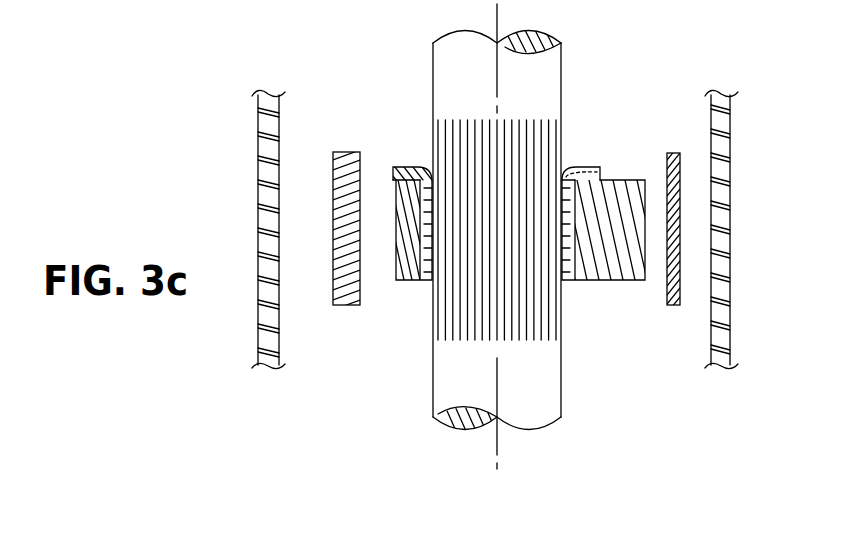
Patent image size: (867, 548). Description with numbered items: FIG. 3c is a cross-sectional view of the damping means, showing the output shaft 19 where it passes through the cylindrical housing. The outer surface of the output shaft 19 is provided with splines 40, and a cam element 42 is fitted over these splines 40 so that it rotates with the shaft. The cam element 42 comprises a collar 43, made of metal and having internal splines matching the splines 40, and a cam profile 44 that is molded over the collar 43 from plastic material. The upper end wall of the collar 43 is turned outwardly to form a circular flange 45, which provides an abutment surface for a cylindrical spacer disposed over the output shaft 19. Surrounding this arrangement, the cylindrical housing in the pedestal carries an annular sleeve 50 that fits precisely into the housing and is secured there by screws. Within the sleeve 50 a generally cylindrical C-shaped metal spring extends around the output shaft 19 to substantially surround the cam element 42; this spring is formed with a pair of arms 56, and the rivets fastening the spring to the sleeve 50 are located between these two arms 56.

The output shaft 19 is at (447, 62).
The splines 40 is at (530, 315).
The cam element 42 is at (622, 172).
The collar 43 is at (430, 283).
The cam profile 44 is at (617, 275).
The circular flange 45 is at (407, 166).
The annular sleeve 50 is at (257, 147).
The arms 56 is at (333, 186).